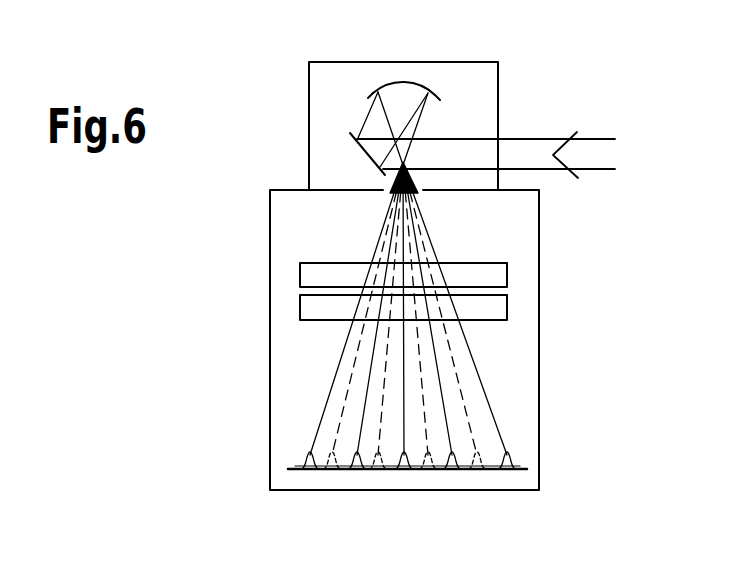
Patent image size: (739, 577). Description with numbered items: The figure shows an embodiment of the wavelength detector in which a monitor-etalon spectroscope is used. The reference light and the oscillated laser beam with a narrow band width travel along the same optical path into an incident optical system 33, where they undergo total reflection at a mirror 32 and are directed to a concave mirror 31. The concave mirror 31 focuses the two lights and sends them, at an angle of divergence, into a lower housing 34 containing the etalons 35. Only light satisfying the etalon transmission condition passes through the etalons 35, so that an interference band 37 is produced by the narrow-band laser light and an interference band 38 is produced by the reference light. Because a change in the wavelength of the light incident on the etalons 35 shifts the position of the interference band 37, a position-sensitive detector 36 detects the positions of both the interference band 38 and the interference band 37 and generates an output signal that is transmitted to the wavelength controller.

The concave mirror 31 is at (419, 84).
The mirror 32 is at (355, 148).
The incident optical system 33 is at (498, 97).
The housing of detector arrangement 34 is at (539, 222).
The etalons 35 is at (507, 272).
The position-sensitive detector 36 is at (527, 469).
The interference band 37 is at (505, 453).
The interference band 38 is at (330, 452).